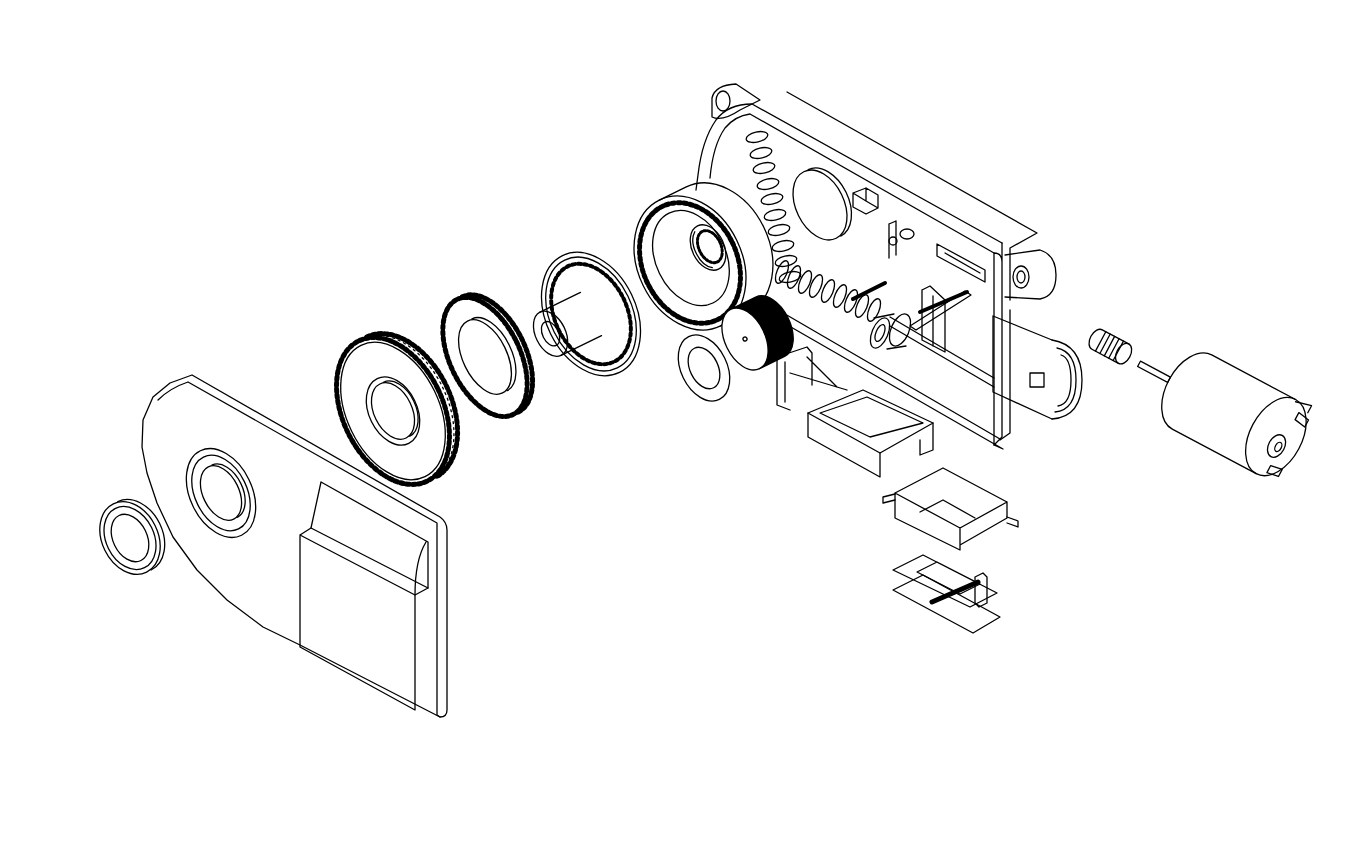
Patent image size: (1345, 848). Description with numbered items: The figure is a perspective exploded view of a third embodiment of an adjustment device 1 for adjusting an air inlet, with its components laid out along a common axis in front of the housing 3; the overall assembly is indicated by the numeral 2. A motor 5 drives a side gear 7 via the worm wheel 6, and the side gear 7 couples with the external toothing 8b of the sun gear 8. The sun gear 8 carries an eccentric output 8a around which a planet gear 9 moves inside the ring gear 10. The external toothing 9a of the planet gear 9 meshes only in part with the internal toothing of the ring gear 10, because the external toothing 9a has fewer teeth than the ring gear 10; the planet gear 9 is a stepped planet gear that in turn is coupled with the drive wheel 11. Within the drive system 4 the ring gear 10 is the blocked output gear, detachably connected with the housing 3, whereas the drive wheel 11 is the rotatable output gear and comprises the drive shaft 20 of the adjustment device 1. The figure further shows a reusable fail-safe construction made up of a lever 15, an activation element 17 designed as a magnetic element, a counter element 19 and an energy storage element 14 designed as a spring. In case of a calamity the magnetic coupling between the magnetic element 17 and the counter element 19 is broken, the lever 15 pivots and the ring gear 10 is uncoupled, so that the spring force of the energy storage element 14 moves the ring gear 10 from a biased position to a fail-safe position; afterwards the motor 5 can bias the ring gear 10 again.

The adjustment device 1 is at (307, 237).
The gear train 2 is at (444, 190).
The housing 3 is at (960, 201).
The drive system 4 is at (356, 224).
The motor 5 is at (1256, 390).
The worm wheel 6 is at (1122, 338).
The side gear 7 is at (746, 355).
The sun gear 8 is at (360, 367).
The eccentric output 8a is at (393, 411).
The external toothing of the sun gear 8b is at (372, 333).
The planet gear 9 is at (507, 412).
The external toothing of the planet gear 9a is at (462, 300).
The ring gear 10 is at (655, 200).
The drive wheel 11 is at (572, 258).
The energy storage element 14 is at (712, 97).
The lever 15 is at (848, 453).
The activation element 17 is at (1000, 521).
The counter element 19 is at (988, 621).
The drive shaft 20 is at (572, 366).